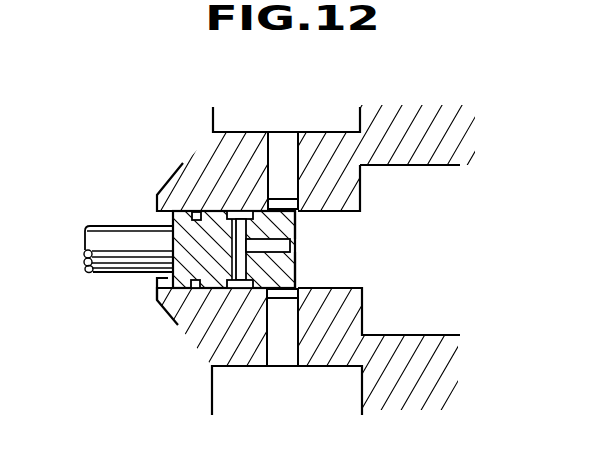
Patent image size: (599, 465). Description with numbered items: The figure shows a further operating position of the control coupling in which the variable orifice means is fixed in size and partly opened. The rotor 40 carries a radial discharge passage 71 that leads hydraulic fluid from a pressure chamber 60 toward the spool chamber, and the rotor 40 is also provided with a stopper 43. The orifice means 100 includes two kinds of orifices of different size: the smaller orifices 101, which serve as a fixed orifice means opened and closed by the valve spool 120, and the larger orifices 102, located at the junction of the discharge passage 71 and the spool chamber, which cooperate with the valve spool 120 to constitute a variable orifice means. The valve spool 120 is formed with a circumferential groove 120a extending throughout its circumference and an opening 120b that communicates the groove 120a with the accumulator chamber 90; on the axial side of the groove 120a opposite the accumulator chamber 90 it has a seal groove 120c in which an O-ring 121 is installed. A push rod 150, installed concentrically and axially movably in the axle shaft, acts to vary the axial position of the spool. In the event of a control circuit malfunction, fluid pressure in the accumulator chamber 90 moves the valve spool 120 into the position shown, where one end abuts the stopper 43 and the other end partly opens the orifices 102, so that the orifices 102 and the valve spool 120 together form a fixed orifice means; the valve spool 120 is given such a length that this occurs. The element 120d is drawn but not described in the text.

The rotor 40 is at (329, 350).
The stopper 43 is at (152, 291).
The pressure chamber 60 is at (281, 119).
The discharge passage 71 is at (284, 343).
The accumulator chamber 90 is at (329, 142).
The orifice means 100 is at (305, 174).
The orifice 101 is at (297, 227).
The orifice 102 is at (288, 200).
The valve spool 120 is at (281, 227).
The circumferential groove 120a is at (223, 208).
The opening 120b is at (297, 272).
The seal groove 120c is at (196, 289).
The slot 120d is at (297, 234).
The O-ring 121 is at (180, 211).
The push rod 150 is at (114, 236).